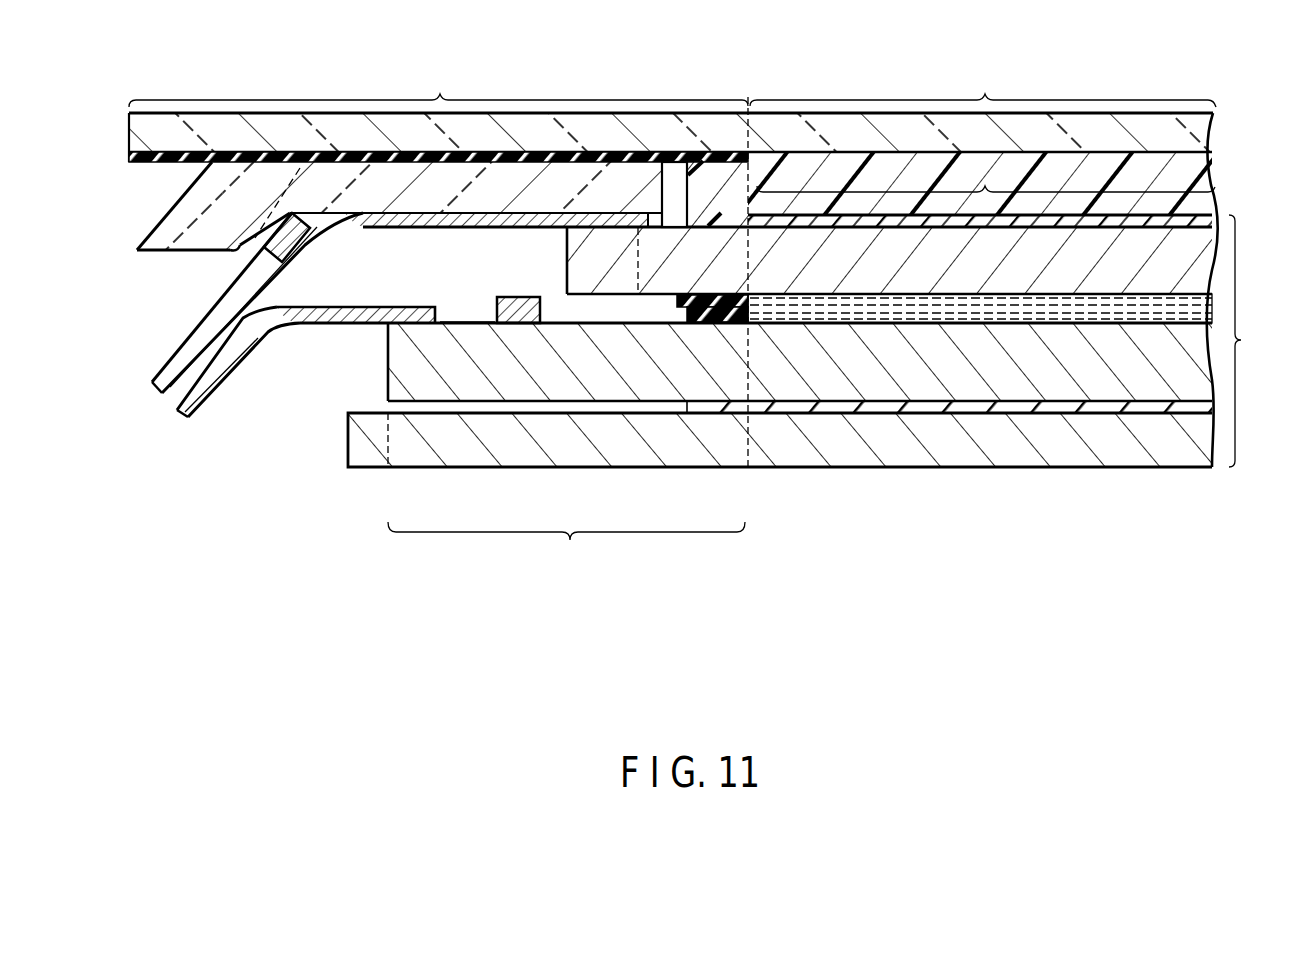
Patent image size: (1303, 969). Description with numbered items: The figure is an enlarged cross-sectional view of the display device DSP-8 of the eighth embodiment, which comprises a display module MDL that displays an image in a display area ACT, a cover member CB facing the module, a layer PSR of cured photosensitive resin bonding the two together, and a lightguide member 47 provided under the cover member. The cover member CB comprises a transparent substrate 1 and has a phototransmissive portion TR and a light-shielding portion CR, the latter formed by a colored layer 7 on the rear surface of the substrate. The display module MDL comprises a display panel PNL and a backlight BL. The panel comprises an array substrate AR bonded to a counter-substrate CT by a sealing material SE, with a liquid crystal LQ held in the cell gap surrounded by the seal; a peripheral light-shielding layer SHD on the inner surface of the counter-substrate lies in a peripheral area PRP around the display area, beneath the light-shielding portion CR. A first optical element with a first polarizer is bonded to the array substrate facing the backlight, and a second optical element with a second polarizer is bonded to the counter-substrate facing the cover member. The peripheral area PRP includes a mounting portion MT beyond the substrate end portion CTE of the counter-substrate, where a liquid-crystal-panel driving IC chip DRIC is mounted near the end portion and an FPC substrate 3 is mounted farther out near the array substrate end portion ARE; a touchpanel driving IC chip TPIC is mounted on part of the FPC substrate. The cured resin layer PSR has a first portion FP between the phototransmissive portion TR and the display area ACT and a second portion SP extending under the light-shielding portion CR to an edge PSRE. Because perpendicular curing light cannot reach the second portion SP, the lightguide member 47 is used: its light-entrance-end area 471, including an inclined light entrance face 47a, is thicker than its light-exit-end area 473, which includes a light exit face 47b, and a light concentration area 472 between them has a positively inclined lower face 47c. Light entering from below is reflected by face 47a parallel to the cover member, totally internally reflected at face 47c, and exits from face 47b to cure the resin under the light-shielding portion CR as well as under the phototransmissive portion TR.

The transparent substrate 1 is at (1213, 130).
The cover member CB is at (124, 127).
The colored layer 7 is at (152, 163).
The lightguide member 47 is at (163, 244).
The light entrance face 47a is at (175, 207).
The light exit face 47b is at (676, 178).
The lower face 47c is at (240, 247).
The light-entrance-end area 471 is at (207, 232).
The light concentration area 472 is at (261, 200).
The light-exit-end area 473 is at (513, 177).
The touchpanel driving IC chip TPIC is at (283, 258).
The FPC substrate 3 is at (173, 372).
The light-shielding portion CR is at (438, 83).
The phototransmissive portion TR is at (983, 83).
The second portion SP is at (712, 190).
The first portion FP is at (800, 173).
The display area ACT is at (986, 173).
The mounting portion MT is at (482, 295).
The liquid-crystal-panel driving IC chip DRIC is at (516, 297).
The array substrate end portion ARE is at (382, 352).
The display panel PNL is at (382, 404).
The substrate end portion CTE is at (566, 280).
The edge PSRE is at (645, 220).
The peripheral light-shielding layer SHD is at (690, 320).
The sealing material SE is at (718, 302).
The array substrate AR is at (768, 385).
The liquid crystal LQ is at (812, 312).
The counter-substrate CT is at (848, 280).
The cured photosensitive resin layer PSR is at (907, 205).
The backlight BL is at (1178, 457).
The display module MDL is at (1263, 341).
The peripheral area PRP is at (566, 547).
The display device DSP-8 is at (623, 597).